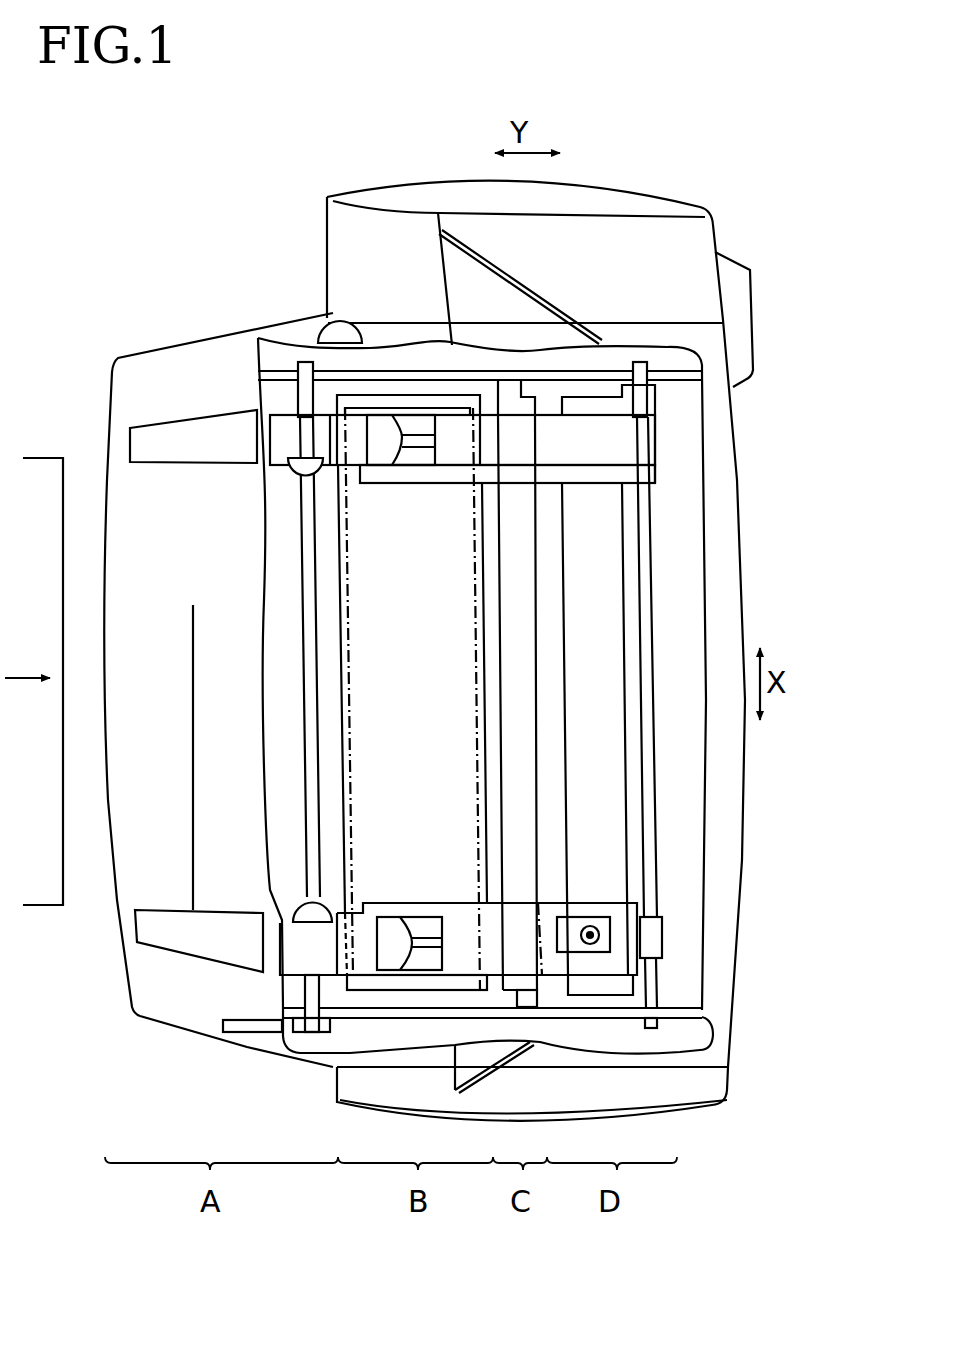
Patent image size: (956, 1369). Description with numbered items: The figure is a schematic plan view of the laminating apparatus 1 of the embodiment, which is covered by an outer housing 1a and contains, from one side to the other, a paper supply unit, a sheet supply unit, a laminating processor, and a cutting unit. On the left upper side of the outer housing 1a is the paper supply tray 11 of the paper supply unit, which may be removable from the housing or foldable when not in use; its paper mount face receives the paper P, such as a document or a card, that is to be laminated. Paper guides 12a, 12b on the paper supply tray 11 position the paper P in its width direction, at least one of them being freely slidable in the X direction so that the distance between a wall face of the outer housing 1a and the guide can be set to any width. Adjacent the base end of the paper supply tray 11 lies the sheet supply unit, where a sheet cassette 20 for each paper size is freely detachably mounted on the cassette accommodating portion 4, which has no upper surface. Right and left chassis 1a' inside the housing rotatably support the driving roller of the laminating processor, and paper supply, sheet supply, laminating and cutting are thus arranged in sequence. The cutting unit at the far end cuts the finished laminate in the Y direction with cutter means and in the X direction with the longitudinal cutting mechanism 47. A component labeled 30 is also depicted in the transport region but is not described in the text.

The laminating apparatus 1 is at (263, 190).
The outer housing 1a is at (525, 226).
The chassis 1a' is at (510, 665).
The paper supply tray 11 is at (130, 497).
The paper guide 12a is at (300, 470).
The paper guide 12b is at (300, 905).
The cassette accommodating portion 4 is at (345, 650).
The sheet cassette 20 is at (408, 395).
The transport roller 30 is at (487, 385).
The longitudinal cutting mechanism 47 is at (617, 938).
The paper P is at (40, 482).